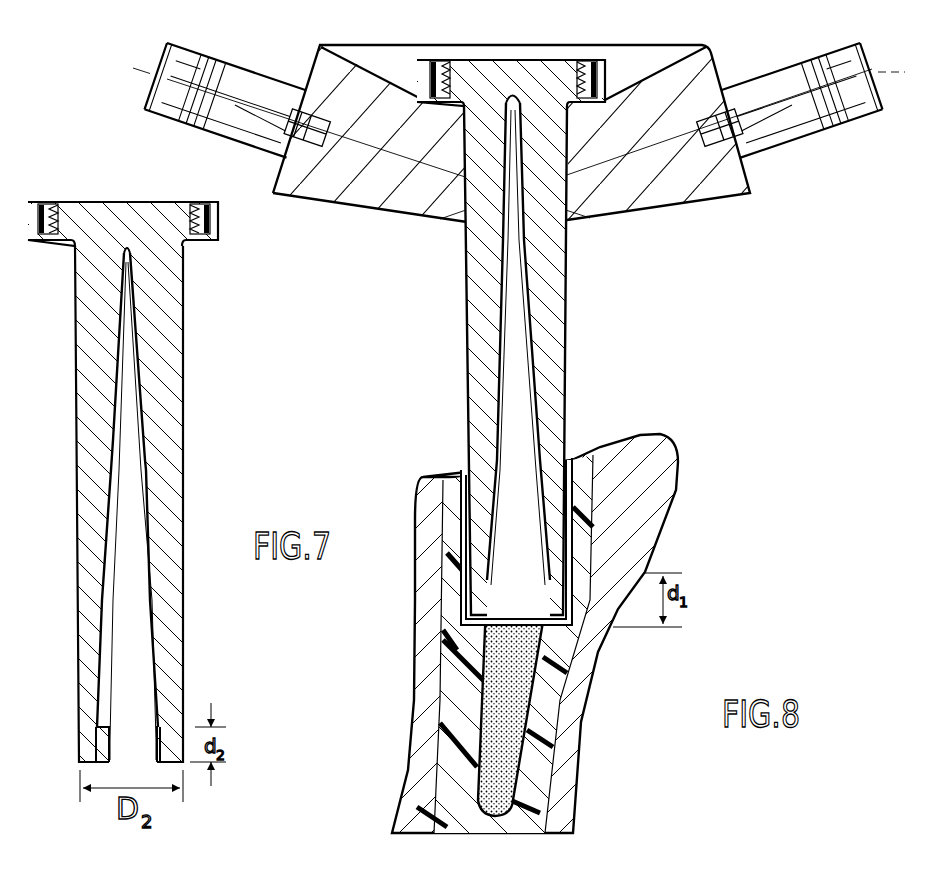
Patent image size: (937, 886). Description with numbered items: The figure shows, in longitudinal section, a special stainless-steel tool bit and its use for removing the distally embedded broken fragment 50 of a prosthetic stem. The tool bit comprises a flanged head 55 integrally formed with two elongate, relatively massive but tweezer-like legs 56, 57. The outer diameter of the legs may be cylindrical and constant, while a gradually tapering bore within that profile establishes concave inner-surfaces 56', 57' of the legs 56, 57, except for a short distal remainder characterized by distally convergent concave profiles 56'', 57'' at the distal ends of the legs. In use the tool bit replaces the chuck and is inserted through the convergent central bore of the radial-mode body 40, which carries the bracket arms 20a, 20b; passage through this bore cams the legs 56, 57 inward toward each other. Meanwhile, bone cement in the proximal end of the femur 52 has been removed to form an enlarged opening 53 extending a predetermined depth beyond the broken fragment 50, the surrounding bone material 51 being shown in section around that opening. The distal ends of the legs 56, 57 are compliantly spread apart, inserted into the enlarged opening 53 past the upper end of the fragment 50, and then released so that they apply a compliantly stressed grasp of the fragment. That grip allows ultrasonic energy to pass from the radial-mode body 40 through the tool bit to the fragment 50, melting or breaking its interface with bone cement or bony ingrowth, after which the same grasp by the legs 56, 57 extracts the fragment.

In FIG. 8, the first bracket arm 20a is at (795, 146).
In FIG. 8, the second bracket arm 20b is at (258, 148).
In FIG. 8, the radial-mode body 40 is at (658, 207).
In FIG. 8, the embedded broken fragment 50 is at (513, 707).
In FIG. 8, the cancellous bone 51 is at (444, 655).
In FIG. 8, the femur 52 is at (425, 578).
In FIG. 8, the enlarged opening 53 is at (570, 537).
In FIG. 7, the flanged head 55 is at (132, 218).
In FIG. 8, the flanged head 55 is at (488, 72).
In FIG. 7, the leg 56 is at (109, 504).
In FIG. 8, the leg 56 is at (492, 356).
In FIG. 7, the leg 57 is at (177, 504).
In FIG. 8, the leg 57 is at (549, 359).
In FIG. 7, the concave inner-surface 56' is at (77, 605).
In FIG. 7, the concave inner-surface 57' is at (183, 605).
In FIG. 7, the distally convergent concave profile 56'' is at (70, 744).
In FIG. 7, the distally convergent concave profile 57'' is at (194, 715).